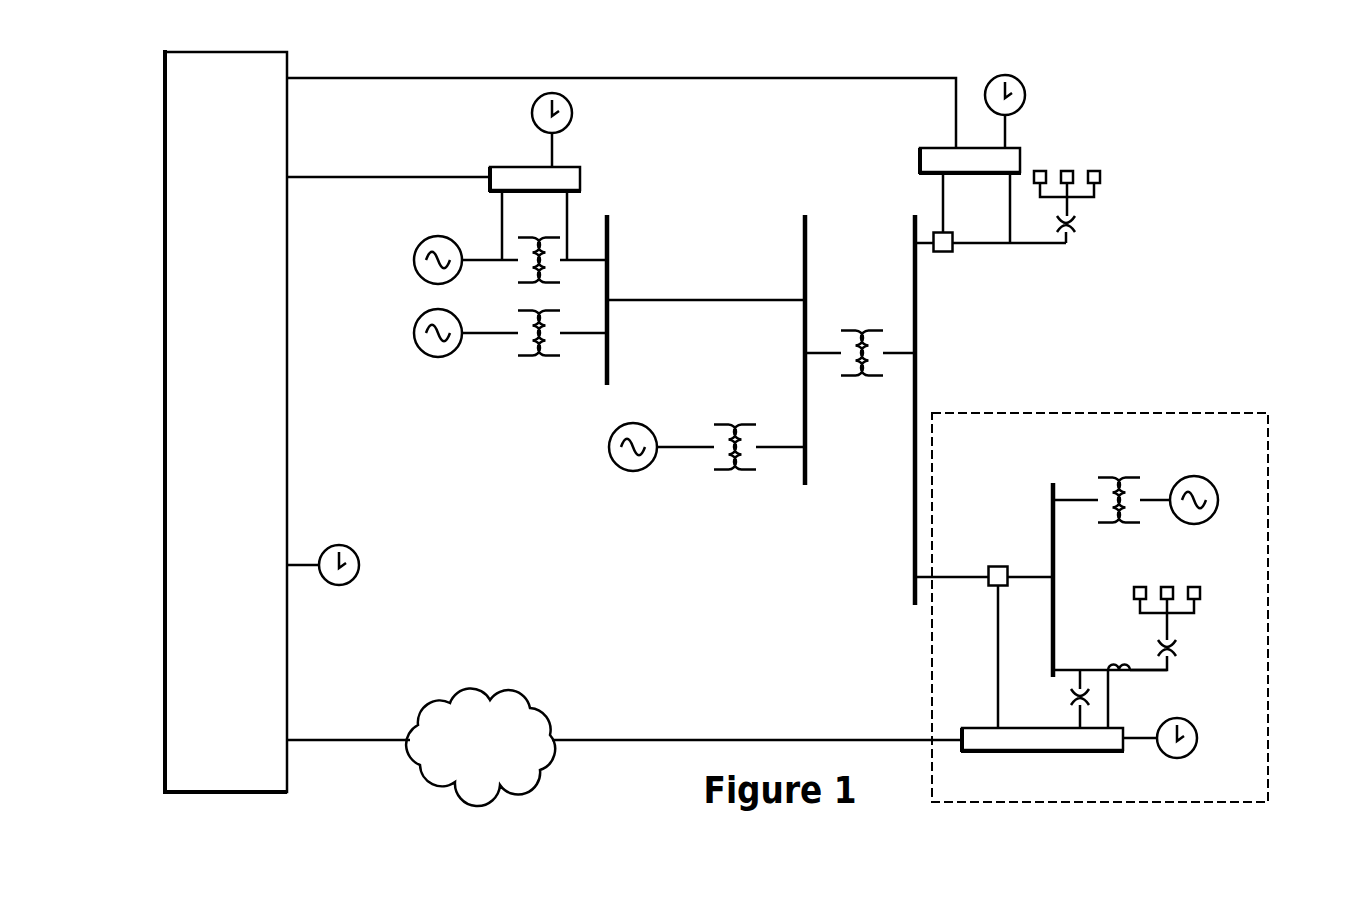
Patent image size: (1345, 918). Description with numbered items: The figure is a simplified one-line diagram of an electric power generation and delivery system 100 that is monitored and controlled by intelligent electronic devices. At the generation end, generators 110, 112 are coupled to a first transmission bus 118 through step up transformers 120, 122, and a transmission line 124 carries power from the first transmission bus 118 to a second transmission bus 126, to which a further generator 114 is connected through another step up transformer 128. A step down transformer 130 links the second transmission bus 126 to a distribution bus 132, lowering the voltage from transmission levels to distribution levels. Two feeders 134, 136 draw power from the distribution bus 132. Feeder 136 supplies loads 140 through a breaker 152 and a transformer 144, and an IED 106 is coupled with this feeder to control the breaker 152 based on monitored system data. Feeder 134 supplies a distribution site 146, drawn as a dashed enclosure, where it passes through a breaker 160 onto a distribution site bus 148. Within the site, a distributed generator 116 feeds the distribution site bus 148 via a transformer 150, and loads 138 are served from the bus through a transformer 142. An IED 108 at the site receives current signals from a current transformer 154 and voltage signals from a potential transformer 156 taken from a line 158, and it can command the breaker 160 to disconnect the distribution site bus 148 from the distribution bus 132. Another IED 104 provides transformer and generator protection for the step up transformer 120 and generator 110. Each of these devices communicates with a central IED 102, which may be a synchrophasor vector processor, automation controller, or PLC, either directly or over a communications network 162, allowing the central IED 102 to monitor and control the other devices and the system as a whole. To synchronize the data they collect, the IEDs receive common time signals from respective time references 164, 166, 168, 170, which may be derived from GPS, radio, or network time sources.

The electric power generation and delivery system 100 is at (1276, 101).
The central IED 102 is at (212, 453).
The IED 104 is at (517, 166).
The IED 106 is at (941, 147).
The IED 108 is at (1095, 752).
The generator 110 is at (413, 256).
The generator 112 is at (413, 331).
The generator 114 is at (608, 451).
The distributed generator 116 is at (1194, 524).
The first transmission bus 118 is at (609, 360).
The step up transformer 120 is at (516, 281).
The step up transformer 122 is at (540, 360).
The transmission line 124 is at (749, 302).
The second transmission bus 126 is at (803, 378).
The step up transformer 128 is at (740, 473).
The step down transformer 130 is at (862, 330).
The distribution bus 132 is at (912, 564).
The feeder 134 is at (944, 580).
The feeder 136 is at (925, 252).
The loads 138 is at (1166, 585).
The loads 140 is at (1104, 172).
The transformer 142 is at (1177, 648).
The transformer 144 is at (1078, 224).
The distribution site 146 is at (1268, 478).
The distribution site bus 148 is at (1050, 486).
The transformer 150 is at (1116, 476).
The breaker 152 is at (953, 253).
The current transformer 154 is at (1117, 678).
The potential transformer 156 is at (1068, 689).
The line 158 is at (1152, 668).
The breaker 160 is at (993, 566).
The network 162 is at (466, 750).
The time reference 164 is at (360, 565).
The time reference 166 is at (573, 113).
The time reference 168 is at (1026, 95).
The time reference 170 is at (1198, 738).